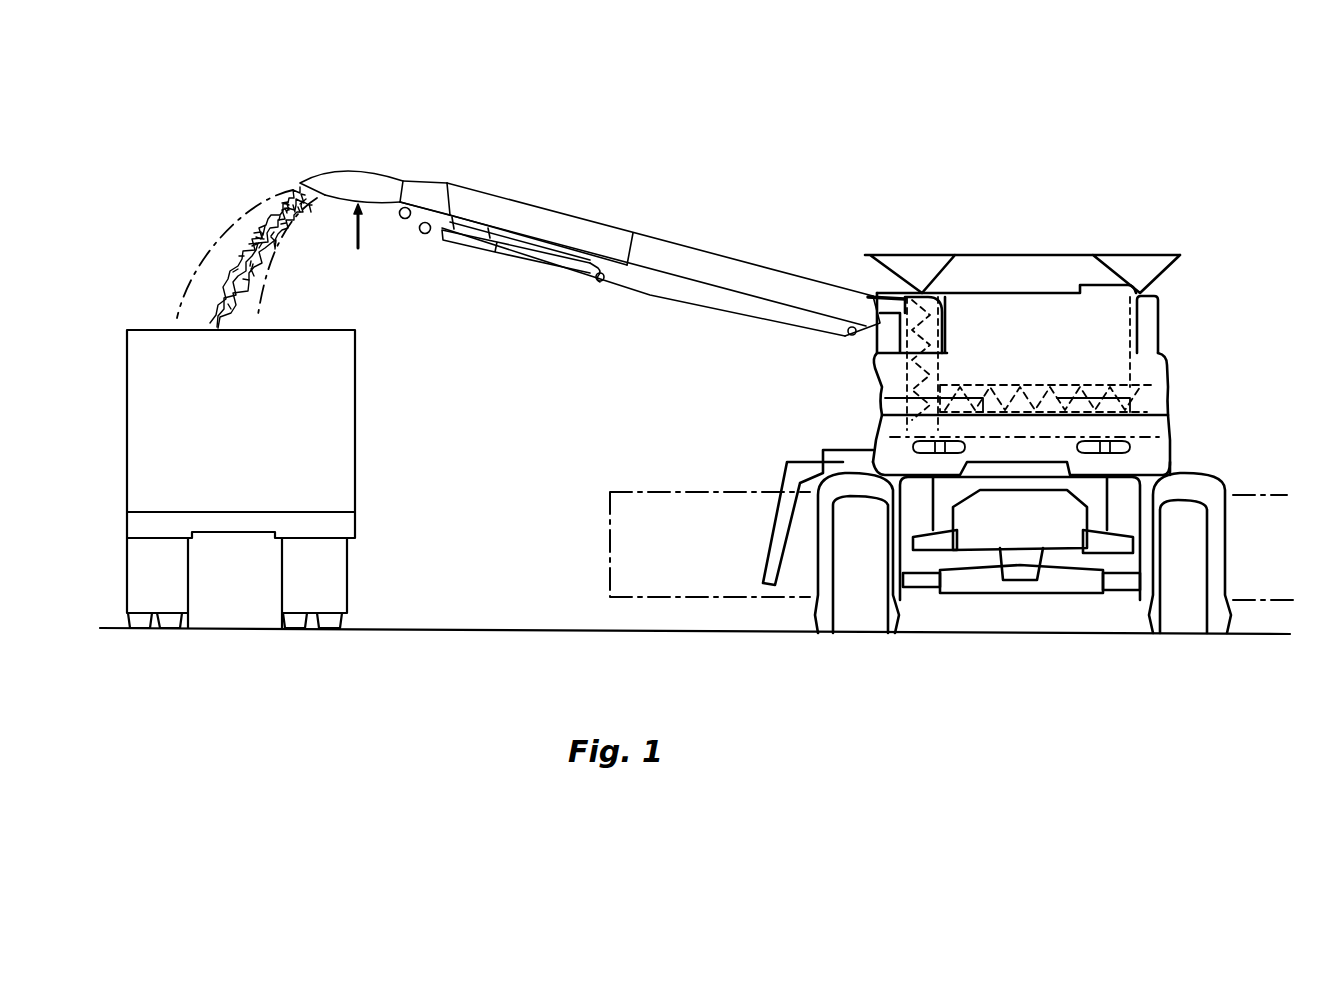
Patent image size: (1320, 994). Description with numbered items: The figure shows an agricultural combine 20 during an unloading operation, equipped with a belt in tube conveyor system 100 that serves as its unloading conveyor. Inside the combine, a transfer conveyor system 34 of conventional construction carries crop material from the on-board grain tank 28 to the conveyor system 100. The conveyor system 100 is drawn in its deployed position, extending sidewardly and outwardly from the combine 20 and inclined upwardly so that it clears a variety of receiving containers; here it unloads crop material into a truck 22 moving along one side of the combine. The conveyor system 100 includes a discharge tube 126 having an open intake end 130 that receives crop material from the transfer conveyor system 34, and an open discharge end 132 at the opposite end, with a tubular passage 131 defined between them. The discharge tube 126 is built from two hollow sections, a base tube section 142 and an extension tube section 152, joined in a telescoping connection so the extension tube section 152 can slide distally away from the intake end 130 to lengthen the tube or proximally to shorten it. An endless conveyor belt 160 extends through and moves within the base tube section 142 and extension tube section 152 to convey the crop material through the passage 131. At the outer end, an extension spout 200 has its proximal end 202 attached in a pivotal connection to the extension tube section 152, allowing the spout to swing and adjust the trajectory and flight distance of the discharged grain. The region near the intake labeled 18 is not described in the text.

The crop intake of harvester 18 is at (857, 290).
The combine 20 is at (1038, 404).
The truck 22 is at (375, 383).
The grain tank 28 is at (988, 250).
The transfer conveyor system 34 is at (963, 387).
The belt in tube conveyor system 100 is at (602, 241).
The discharge tube 126 is at (546, 205).
The intake end 130 is at (842, 303).
The tubular passage 131 is at (665, 278).
The base tube section 142 is at (738, 280).
The extension tube section 152 is at (593, 250).
The endless conveyor belt 160 is at (518, 258).
The discharge end 132 is at (354, 241).
The extension spout 200 is at (348, 180).
The proximal end 202 is at (393, 180).